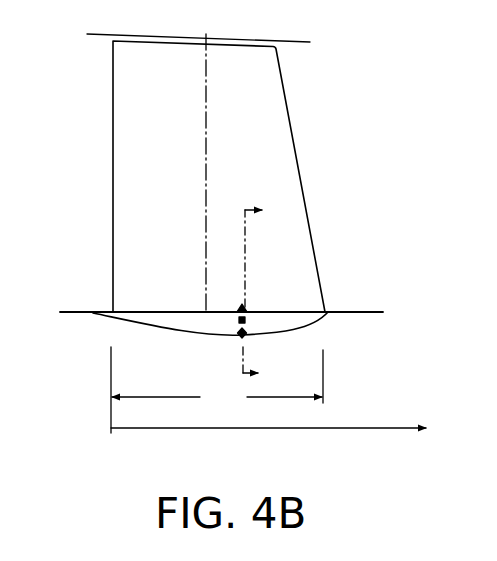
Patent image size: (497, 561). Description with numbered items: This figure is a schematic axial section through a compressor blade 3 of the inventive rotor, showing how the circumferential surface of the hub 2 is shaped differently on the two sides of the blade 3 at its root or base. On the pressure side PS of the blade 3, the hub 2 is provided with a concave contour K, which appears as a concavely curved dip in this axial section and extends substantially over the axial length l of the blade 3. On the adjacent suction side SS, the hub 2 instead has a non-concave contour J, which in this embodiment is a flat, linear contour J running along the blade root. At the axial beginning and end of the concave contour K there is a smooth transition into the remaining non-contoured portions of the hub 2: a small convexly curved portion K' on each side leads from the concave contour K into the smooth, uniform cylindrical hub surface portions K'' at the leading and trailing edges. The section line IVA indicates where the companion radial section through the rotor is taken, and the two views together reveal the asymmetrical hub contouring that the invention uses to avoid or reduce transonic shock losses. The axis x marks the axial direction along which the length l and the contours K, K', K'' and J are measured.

The hub 2 is at (365, 328).
The compressor blade 3 is at (288, 174).
The concave contour K is at (210, 291).
The convexly curved transition portion K' is at (224, 336).
The cylindrical hub surface portion K'' is at (227, 290).
The suction side contour J is at (188, 310).
The suction side SS is at (241, 305).
The pressure side PS is at (226, 341).
The section line IVA— IVA is at (271, 296).
The axial length l is at (228, 398).
The x axis x is at (268, 409).